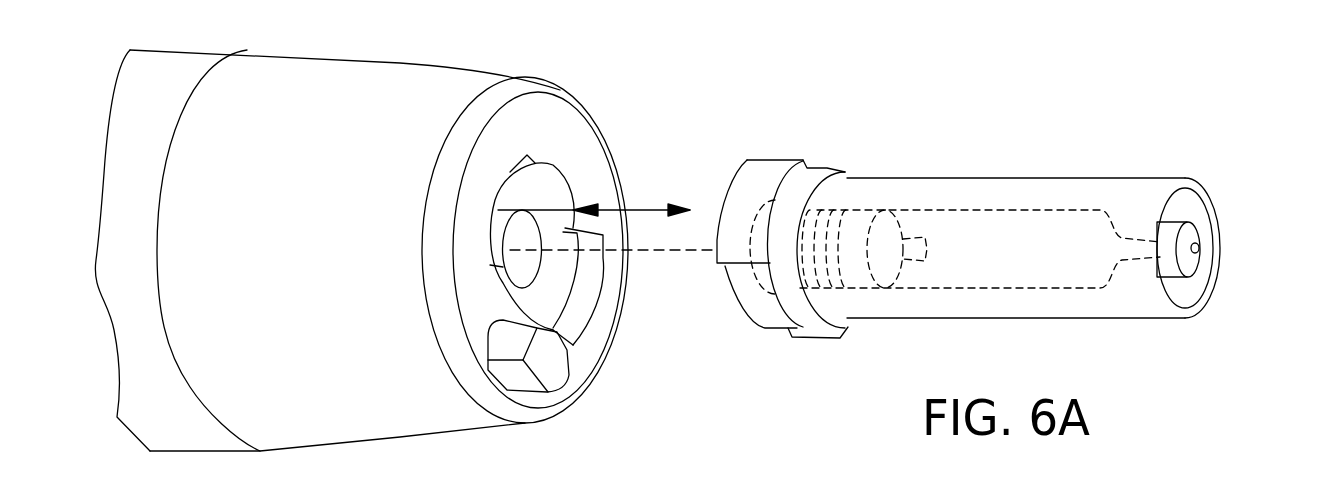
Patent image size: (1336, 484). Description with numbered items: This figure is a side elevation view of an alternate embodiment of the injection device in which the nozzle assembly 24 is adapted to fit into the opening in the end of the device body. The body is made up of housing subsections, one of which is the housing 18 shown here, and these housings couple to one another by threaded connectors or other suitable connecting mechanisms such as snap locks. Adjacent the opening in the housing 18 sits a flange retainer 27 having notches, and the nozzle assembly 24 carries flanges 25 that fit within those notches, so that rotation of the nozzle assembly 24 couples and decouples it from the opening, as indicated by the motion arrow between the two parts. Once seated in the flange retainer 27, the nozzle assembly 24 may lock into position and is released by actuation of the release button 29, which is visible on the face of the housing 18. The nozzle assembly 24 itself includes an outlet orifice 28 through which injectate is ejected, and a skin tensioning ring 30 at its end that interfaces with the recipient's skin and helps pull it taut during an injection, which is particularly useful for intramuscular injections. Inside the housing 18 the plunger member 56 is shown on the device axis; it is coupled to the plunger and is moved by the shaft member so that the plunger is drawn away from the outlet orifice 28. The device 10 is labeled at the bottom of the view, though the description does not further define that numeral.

The connector assembly 10 is at (549, 478).
The housing 18 is at (427, 87).
The nozzle assembly 24 is at (1088, 156).
The flanges 25 is at (770, 170).
The flange retainer 27 is at (575, 175).
The outlet orifice 28 is at (1197, 247).
The release button 29 is at (547, 363).
The skin tensioning ring 30 is at (1192, 313).
The plunger member 56 is at (530, 267).